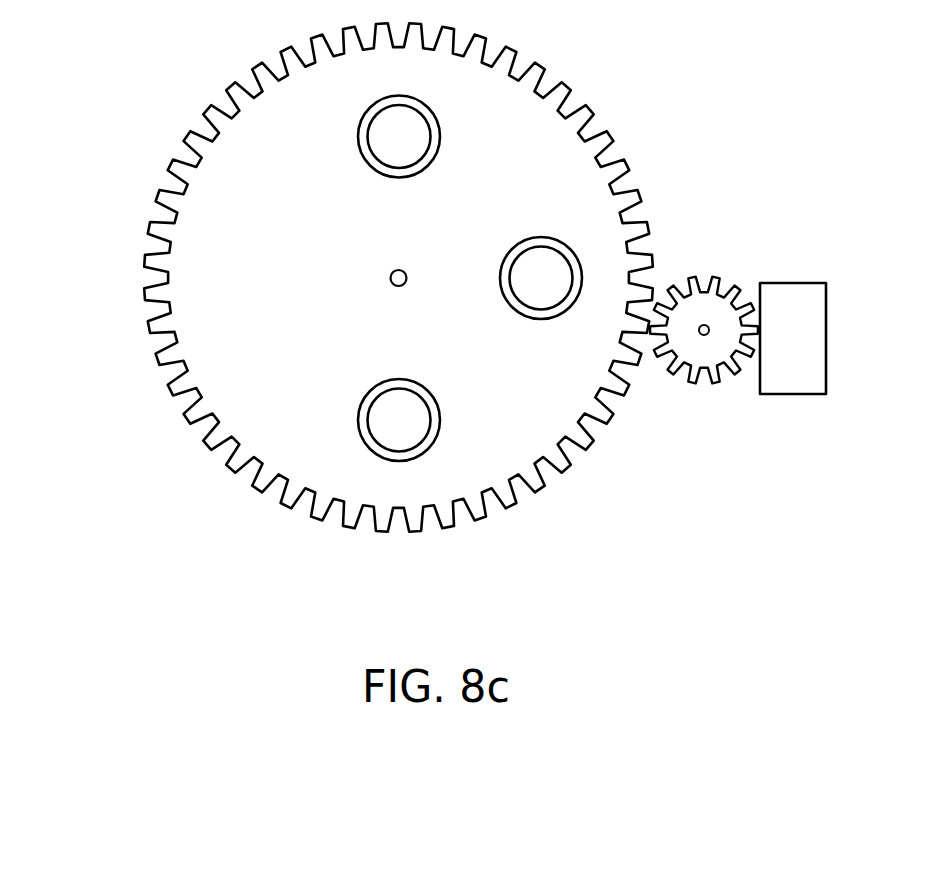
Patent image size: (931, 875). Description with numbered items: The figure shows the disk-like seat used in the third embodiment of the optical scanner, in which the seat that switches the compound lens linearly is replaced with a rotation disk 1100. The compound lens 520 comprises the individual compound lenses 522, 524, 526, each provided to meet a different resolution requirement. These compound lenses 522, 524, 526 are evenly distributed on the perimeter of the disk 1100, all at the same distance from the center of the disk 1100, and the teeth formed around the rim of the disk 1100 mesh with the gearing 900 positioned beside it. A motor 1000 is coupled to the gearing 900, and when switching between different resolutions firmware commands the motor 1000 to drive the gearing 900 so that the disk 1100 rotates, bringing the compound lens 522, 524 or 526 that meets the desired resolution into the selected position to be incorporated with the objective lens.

The compound lens 520 is at (302, 310).
The compound lens 522 is at (360, 148).
The compound lens 524 is at (502, 292).
The compound lens 526 is at (264, 447).
The gearing 900 is at (705, 368).
The motor 1000 is at (793, 388).
The rotation disk 1100 is at (558, 132).